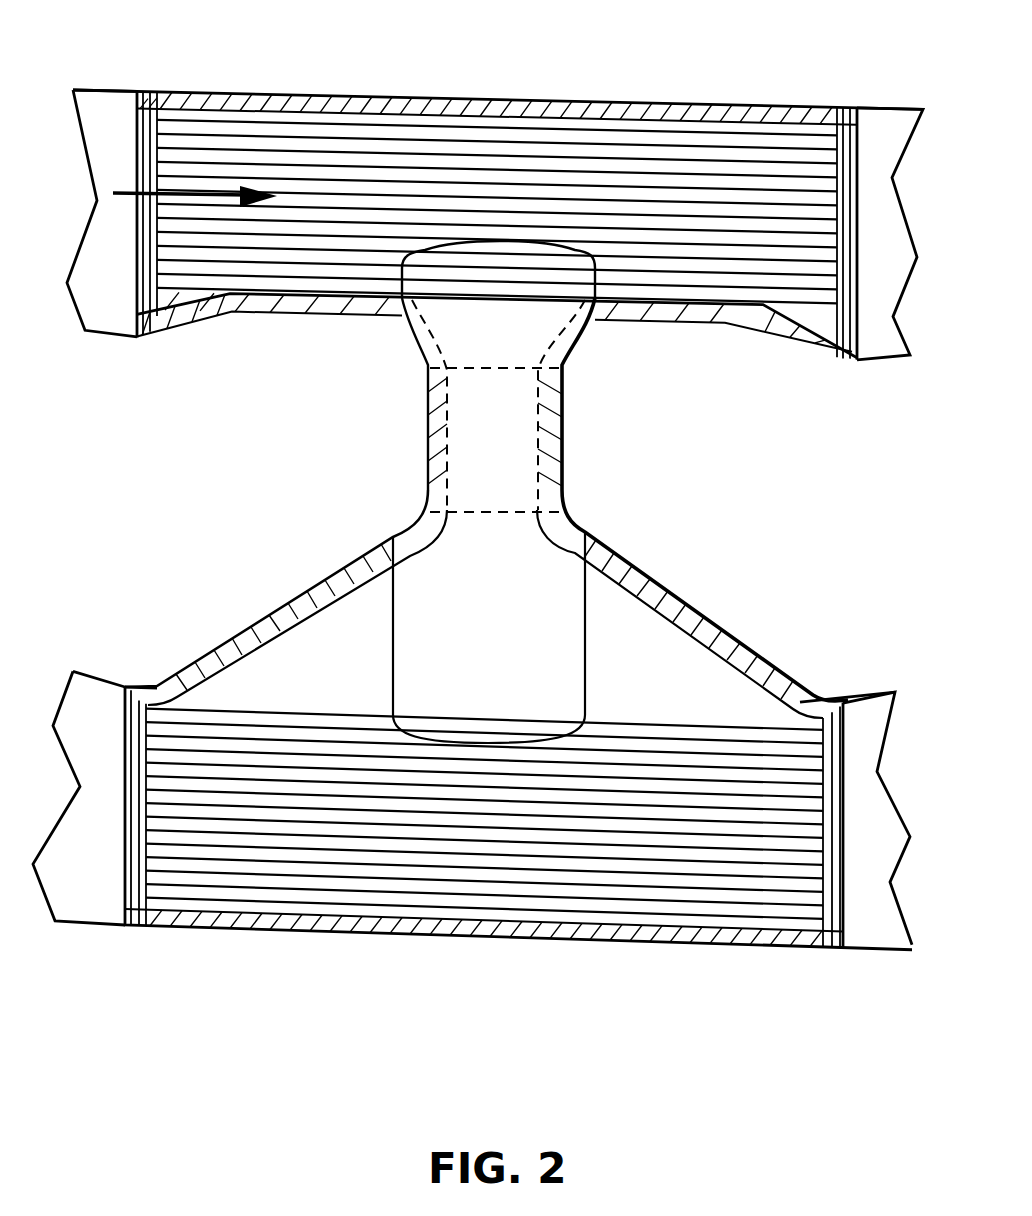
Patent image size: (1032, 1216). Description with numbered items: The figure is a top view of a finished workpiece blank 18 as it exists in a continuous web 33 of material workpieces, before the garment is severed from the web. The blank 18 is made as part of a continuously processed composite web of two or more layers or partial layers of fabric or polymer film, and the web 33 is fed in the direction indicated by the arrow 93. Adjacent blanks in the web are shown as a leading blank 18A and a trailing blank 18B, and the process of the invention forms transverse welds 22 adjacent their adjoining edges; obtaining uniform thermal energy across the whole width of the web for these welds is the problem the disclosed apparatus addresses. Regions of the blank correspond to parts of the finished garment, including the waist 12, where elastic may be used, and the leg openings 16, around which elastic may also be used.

The waist 12 is at (390, 95).
The leg openings 16 is at (228, 323).
The blank 18 is at (610, 78).
The leading blank 18A is at (177, 74).
The trailing blank 18B is at (106, 74).
The welds 22 is at (167, 153).
The web 33 is at (84, 135).
The arrow 93 is at (180, 202).